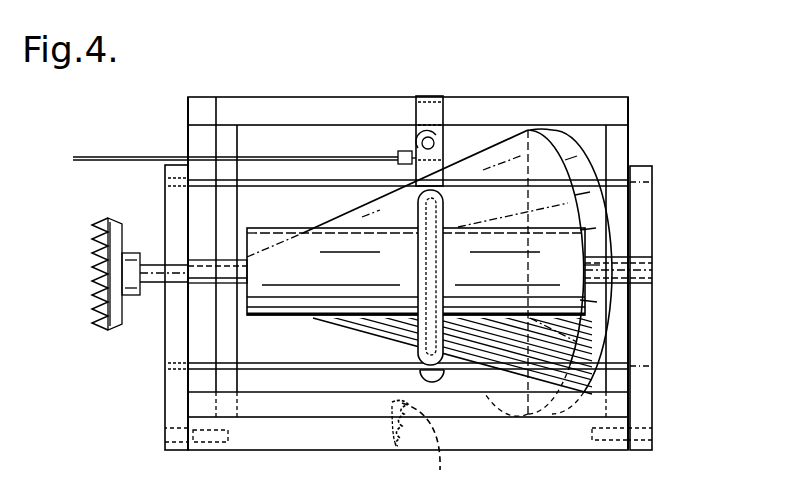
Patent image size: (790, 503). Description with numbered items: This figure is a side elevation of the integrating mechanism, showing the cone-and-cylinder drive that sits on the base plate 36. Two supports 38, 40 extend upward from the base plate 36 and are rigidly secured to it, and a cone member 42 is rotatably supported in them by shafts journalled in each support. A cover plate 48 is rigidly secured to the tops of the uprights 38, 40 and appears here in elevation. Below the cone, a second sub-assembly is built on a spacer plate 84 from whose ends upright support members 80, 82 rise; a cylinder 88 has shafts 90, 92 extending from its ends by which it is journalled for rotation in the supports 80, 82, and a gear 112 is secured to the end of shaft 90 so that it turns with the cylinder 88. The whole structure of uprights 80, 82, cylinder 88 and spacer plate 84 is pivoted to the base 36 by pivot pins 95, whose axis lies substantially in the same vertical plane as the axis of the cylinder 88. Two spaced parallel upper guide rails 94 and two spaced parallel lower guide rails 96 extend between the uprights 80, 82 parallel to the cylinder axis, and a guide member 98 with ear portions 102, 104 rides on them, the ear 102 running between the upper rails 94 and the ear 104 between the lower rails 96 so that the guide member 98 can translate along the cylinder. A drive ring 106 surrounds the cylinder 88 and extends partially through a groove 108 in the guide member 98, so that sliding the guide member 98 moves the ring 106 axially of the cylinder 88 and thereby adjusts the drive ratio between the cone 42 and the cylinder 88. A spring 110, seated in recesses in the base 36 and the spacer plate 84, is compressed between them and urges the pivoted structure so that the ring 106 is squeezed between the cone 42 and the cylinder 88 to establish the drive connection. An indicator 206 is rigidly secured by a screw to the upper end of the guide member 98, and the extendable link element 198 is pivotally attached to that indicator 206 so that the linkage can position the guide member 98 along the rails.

The base plate 36 is at (400, 447).
The support 38 is at (192, 138).
The support 40 is at (620, 141).
The cone member 42 is at (370, 330).
The cover plate 48 is at (517, 108).
The upright support member 80 is at (165, 204).
The upright support member 82 is at (648, 212).
The spacer plate 84 is at (292, 405).
The cylinder 88 is at (312, 281).
The shaft 90 is at (205, 278).
The shaft 92 is at (620, 265).
The upper guide rails 94 is at (305, 186).
The pivot pins 95 is at (165, 435).
The lower guide rails 96 is at (290, 362).
The guide member 98 is at (447, 195).
The ear portion 102 is at (420, 143).
The ear portion 104 is at (420, 378).
The drive ring 106 is at (428, 242).
The groove 108 is at (440, 270).
The spring 110 is at (441, 464).
The gear 112 is at (92, 248).
The element 198 is at (112, 157).
The indicator 206 is at (418, 105).